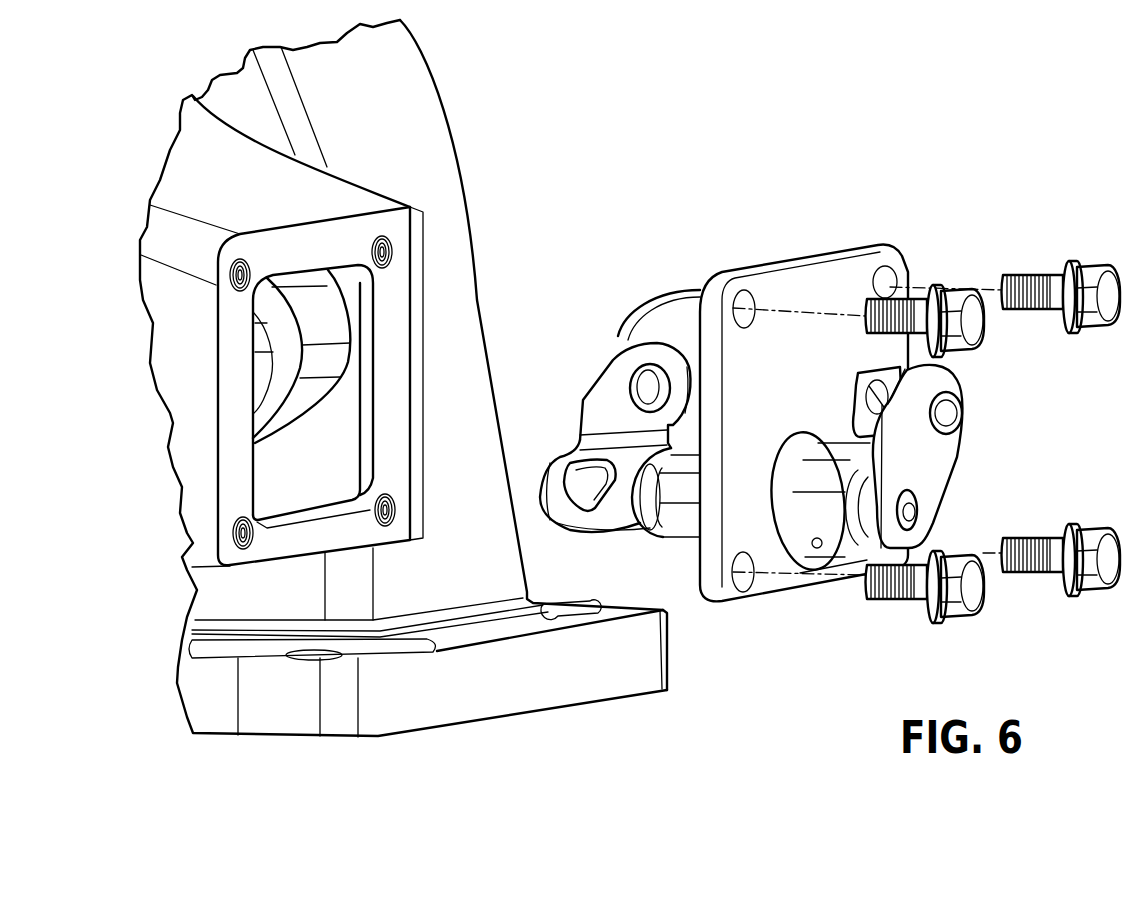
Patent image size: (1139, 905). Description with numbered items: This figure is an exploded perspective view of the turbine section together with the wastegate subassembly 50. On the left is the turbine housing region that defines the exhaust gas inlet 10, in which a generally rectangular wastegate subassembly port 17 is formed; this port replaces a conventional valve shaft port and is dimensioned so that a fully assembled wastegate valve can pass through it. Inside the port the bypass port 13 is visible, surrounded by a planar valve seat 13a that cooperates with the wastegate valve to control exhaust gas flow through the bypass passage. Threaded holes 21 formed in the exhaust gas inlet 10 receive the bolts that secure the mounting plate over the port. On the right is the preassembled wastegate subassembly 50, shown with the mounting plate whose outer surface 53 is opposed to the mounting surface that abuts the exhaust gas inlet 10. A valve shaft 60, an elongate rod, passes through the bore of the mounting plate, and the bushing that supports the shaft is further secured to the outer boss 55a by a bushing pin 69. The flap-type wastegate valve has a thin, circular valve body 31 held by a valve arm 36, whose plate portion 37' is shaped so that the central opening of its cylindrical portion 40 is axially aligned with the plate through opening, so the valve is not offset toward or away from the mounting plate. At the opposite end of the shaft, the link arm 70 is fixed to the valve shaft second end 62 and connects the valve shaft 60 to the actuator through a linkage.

The exhaust gas inlet 10 is at (370, 389).
The bypass port 13 is at (337, 362).
The planar valve seat 13a is at (261, 418).
The wastegate subassembly port 17 is at (367, 330).
The threaded holes 21 is at (392, 247).
The valve body 31 is at (677, 303).
The valve arm 36 is at (570, 458).
The plate portion 37' is at (635, 368).
The cylindrical portion 40 is at (617, 521).
The wastegate subassembly 50 is at (820, 383).
The outer surface 53 is at (848, 262).
The outer boss 55a is at (825, 563).
The valve shaft 60 is at (648, 516).
The valve shaft second end 62 is at (913, 515).
The bushing pin 69 is at (815, 547).
The link arm 70 is at (933, 480).